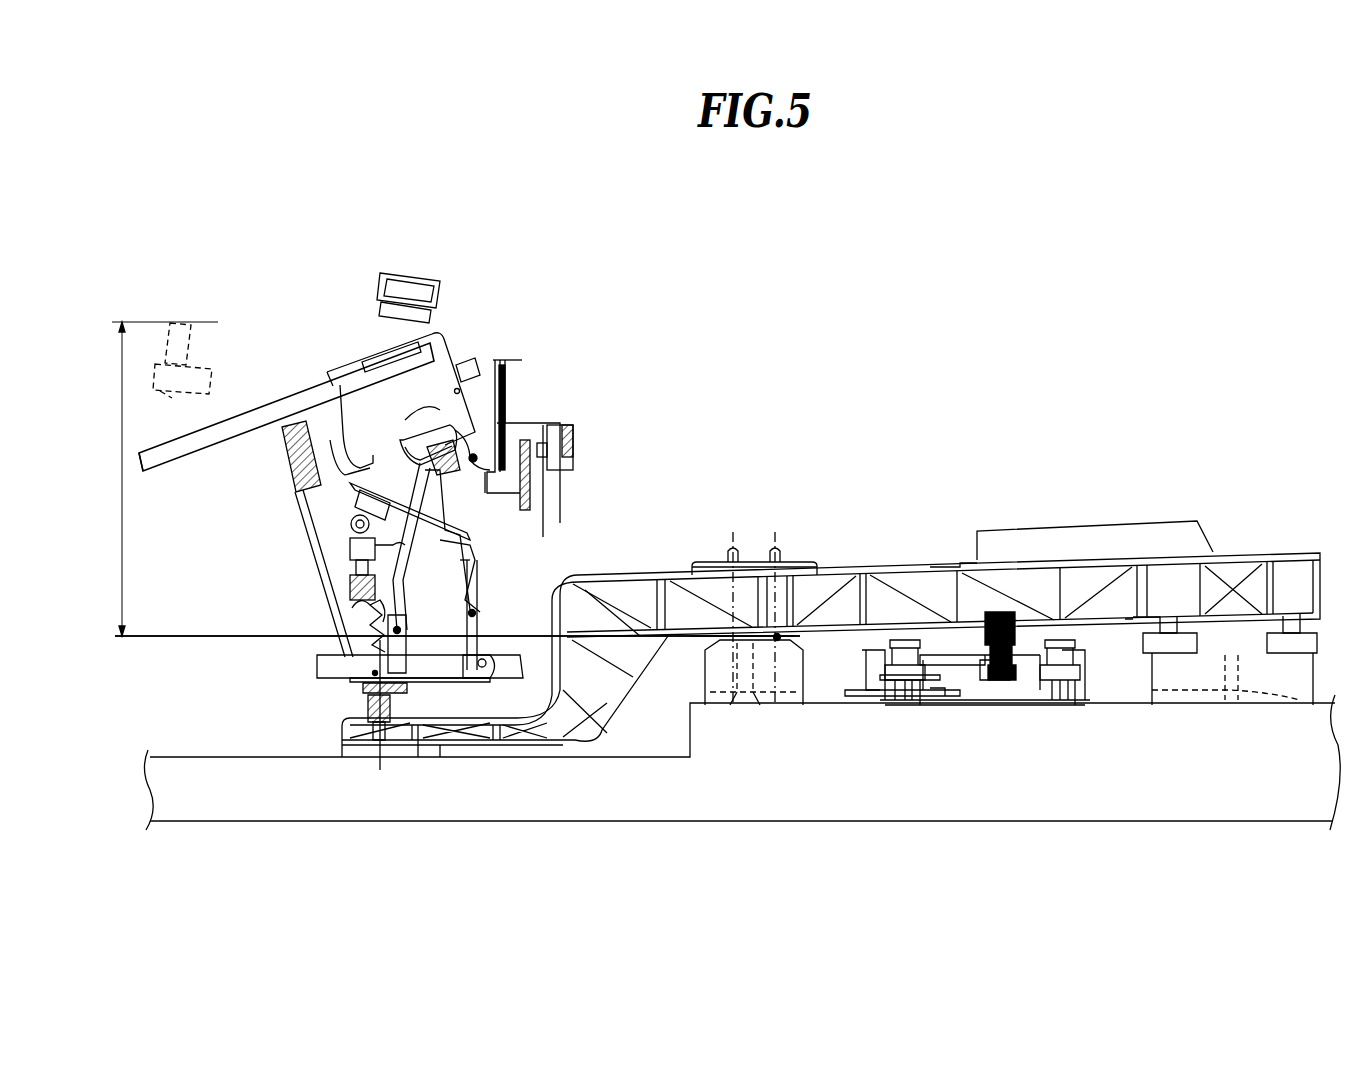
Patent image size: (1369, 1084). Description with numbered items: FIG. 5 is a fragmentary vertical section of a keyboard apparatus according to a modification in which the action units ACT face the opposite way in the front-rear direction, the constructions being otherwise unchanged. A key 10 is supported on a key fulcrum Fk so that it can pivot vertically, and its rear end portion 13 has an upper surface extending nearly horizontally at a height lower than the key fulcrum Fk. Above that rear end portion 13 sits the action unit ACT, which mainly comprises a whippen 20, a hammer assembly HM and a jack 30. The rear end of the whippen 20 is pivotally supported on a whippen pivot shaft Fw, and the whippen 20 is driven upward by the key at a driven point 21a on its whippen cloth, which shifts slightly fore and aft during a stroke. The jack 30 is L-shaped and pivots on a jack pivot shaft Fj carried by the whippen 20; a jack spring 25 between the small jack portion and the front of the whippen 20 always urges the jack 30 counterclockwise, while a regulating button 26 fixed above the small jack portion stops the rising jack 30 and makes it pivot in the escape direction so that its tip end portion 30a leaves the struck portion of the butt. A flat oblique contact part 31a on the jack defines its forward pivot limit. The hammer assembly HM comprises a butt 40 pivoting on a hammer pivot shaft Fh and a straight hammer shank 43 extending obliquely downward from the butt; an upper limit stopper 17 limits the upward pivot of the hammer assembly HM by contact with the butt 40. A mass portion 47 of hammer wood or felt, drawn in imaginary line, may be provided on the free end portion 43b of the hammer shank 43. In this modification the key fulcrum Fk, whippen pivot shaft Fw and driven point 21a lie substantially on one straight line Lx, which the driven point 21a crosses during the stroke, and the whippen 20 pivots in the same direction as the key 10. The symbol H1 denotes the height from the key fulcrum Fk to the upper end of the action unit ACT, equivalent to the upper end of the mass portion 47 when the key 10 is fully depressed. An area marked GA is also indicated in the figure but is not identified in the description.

The mass portion 47 is at (178, 325).
The hammer shank 43 is at (203, 353).
The free end portion of the hammer shank 43b is at (147, 475).
The upper limit stopper 17 is at (380, 307).
The butt 40 is at (356, 366).
The hammer assembly HM is at (448, 328).
The action unit ACT is at (480, 354).
The gripping arm GA is at (395, 457).
The hammer pivot shaft Fh is at (477, 455).
The tip end portion of the jack 30a is at (470, 488).
The height size H1 is at (443, 479).
The contact part 31a is at (360, 482).
The regulating button 26 is at (350, 583).
The jack 30 is at (423, 580).
The jack spring 25 is at (367, 628).
The jack pivot shaft Fj is at (400, 633).
The whippen 20 is at (363, 684).
The driven point 21a is at (375, 673).
The rear end portion of the key 13 is at (420, 743).
The whippen pivot shaft Fw is at (484, 670).
The straight line Lx is at (537, 655).
The key fulcrum Fk is at (777, 640).
The key 10 is at (1297, 553).